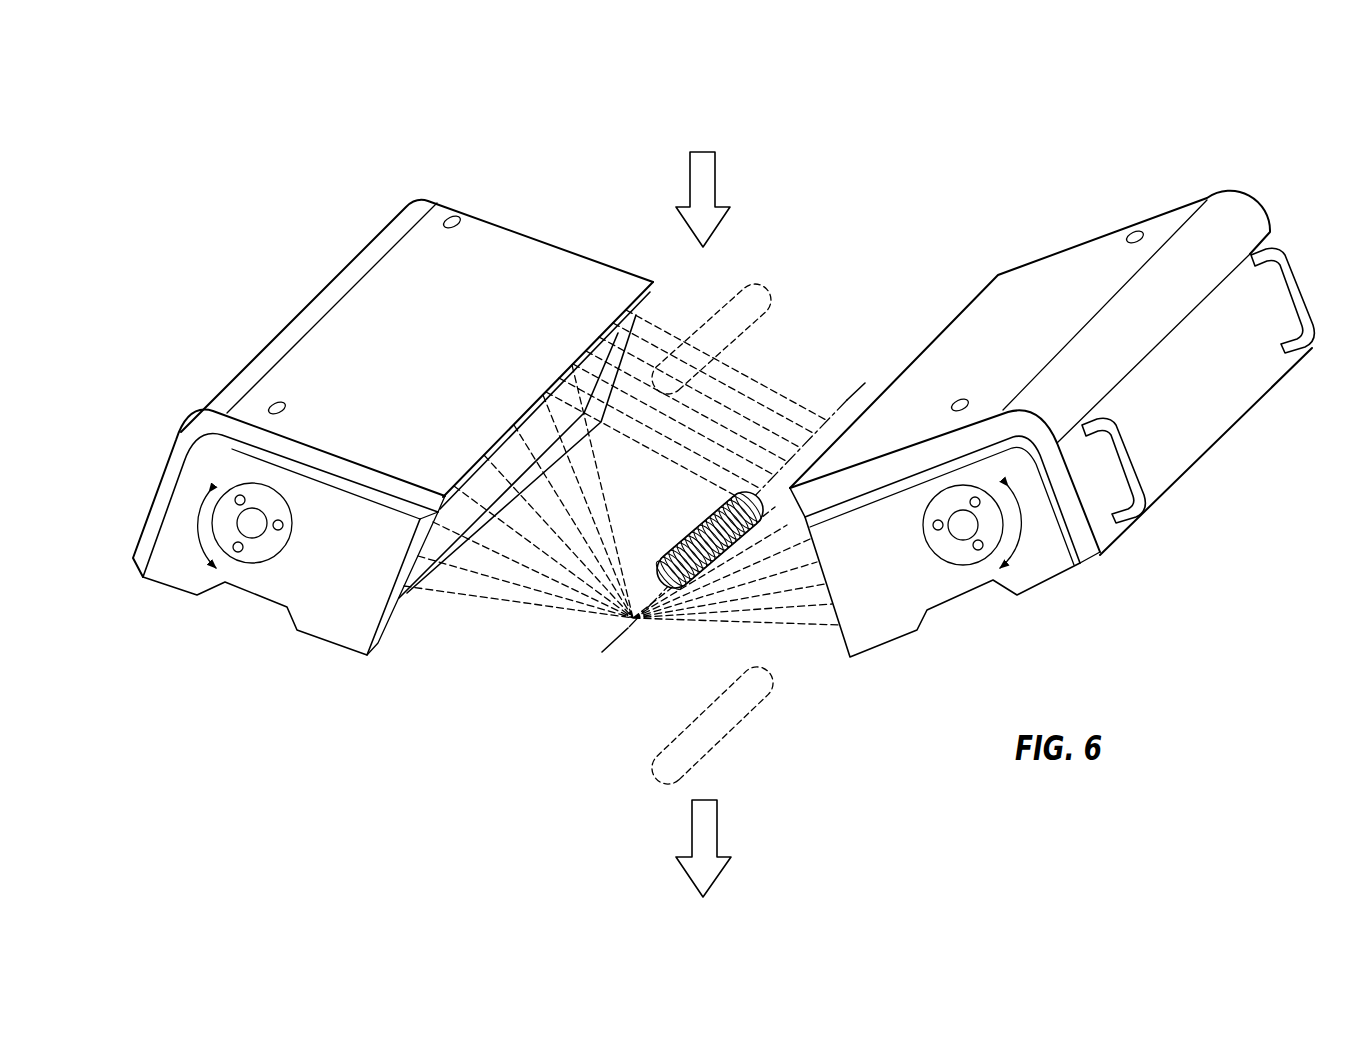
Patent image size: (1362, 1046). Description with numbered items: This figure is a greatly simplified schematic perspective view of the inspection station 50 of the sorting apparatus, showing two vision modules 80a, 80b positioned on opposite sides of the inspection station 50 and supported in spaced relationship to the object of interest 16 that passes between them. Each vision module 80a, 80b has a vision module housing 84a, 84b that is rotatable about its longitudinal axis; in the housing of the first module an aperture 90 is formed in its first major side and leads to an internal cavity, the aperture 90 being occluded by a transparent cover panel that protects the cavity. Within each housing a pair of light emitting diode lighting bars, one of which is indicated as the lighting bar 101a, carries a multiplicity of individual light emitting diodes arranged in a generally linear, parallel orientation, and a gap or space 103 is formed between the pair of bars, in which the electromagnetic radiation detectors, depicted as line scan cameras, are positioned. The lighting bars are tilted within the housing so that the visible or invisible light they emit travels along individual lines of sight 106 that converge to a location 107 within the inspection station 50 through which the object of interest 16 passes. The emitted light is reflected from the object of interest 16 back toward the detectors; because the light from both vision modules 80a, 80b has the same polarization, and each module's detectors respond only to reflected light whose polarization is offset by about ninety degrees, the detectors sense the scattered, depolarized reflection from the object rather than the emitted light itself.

The inspection station 50 is at (876, 185).
The vision module 80a is at (553, 212).
The vision module 80b is at (1127, 198).
The vision module housing 84a is at (451, 373).
The vision module housing 84b is at (1039, 336).
The aperture 90 is at (600, 380).
The light emitting diode lighting bar 101a is at (415, 573).
The gap or space 103 is at (455, 543).
The lines of sight 106 is at (778, 372).
The location 107 is at (852, 395).
The object of interest 16 is at (758, 293).